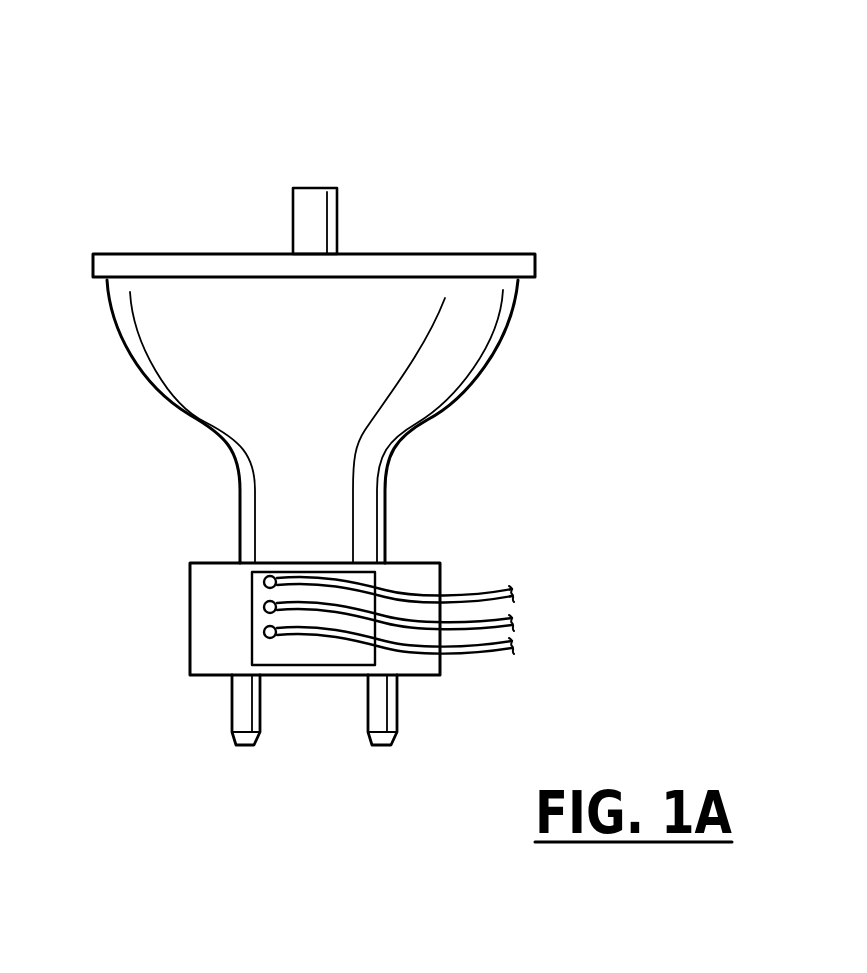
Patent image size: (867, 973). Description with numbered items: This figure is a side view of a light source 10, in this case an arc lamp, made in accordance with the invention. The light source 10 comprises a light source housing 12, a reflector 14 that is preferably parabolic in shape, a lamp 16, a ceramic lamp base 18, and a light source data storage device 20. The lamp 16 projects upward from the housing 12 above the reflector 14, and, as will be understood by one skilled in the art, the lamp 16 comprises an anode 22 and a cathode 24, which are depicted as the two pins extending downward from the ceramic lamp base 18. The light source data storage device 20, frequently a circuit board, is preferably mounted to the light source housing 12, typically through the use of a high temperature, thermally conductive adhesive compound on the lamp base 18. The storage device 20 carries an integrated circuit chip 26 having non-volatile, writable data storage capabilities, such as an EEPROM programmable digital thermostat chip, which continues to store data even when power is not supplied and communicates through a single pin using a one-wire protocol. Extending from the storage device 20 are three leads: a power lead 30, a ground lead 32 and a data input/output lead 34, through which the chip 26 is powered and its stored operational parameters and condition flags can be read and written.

The light source 10 is at (315, 59).
The light source housing 12 is at (493, 240).
The reflector 14 is at (507, 332).
The lamp 16 is at (293, 222).
The ceramic lamp base 18 is at (190, 590).
The light source data storage device 20 is at (298, 524).
The anode 22 is at (232, 713).
The cathode 24 is at (368, 705).
The integrated circuit chip 26 is at (252, 613).
The power lead 30 is at (485, 586).
The ground lead 32 is at (510, 610).
The data input/output lead 34 is at (493, 652).